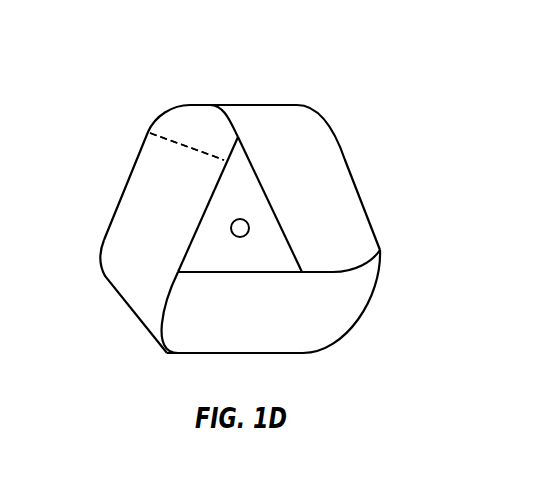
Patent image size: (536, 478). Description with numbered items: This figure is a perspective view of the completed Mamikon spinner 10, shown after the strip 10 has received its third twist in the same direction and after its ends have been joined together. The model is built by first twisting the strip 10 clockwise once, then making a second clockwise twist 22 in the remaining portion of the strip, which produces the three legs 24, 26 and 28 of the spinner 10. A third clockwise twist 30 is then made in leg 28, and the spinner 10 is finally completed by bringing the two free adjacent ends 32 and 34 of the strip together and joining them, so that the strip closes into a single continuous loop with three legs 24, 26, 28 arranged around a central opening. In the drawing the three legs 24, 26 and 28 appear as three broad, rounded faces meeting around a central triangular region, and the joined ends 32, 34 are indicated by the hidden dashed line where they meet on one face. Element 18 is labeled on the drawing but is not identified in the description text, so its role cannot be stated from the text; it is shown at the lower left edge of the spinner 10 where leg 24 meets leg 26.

The strip 10 is at (232, 229).
The lower left edge 18 is at (136, 330).
The second clockwise twist 22 is at (357, 312).
The leg 24 is at (123, 223).
The leg 26 is at (207, 318).
The leg 28 is at (353, 214).
The third clockwise twist 30 is at (250, 104).
The free adjacent end 32 is at (168, 140).
The free adjacent end 34 is at (116, 156).